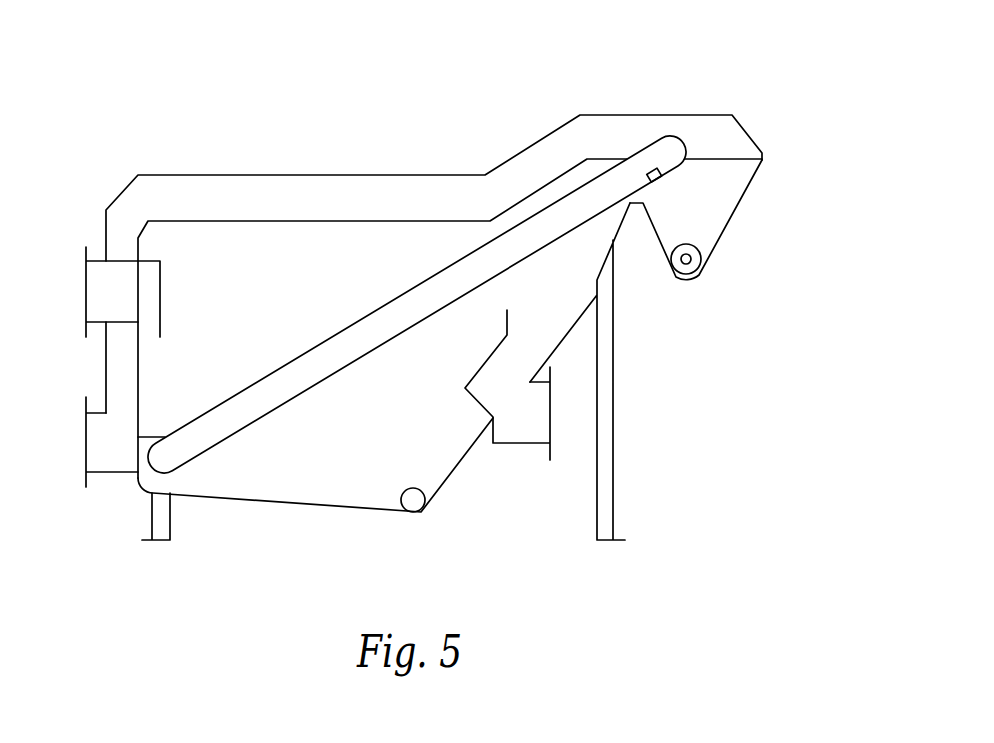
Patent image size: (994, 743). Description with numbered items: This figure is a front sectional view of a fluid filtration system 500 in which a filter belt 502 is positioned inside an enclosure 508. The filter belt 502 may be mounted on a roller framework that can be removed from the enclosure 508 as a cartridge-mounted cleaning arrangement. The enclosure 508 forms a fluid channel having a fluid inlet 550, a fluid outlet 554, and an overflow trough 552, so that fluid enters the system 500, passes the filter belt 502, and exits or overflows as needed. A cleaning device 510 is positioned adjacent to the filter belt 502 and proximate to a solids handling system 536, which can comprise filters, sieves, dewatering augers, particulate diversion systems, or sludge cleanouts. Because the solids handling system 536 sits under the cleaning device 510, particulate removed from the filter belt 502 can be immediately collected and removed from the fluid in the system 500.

The fluid filtration system 500 is at (436, 284).
The filter belt 502 is at (288, 362).
The enclosure 508 is at (247, 220).
The cleaning device 510 is at (662, 178).
The solids handling system 536 is at (718, 270).
The fluid inlet 550 is at (85, 283).
The overflow trough 552 is at (85, 433).
The fluid outlet 554 is at (550, 432).